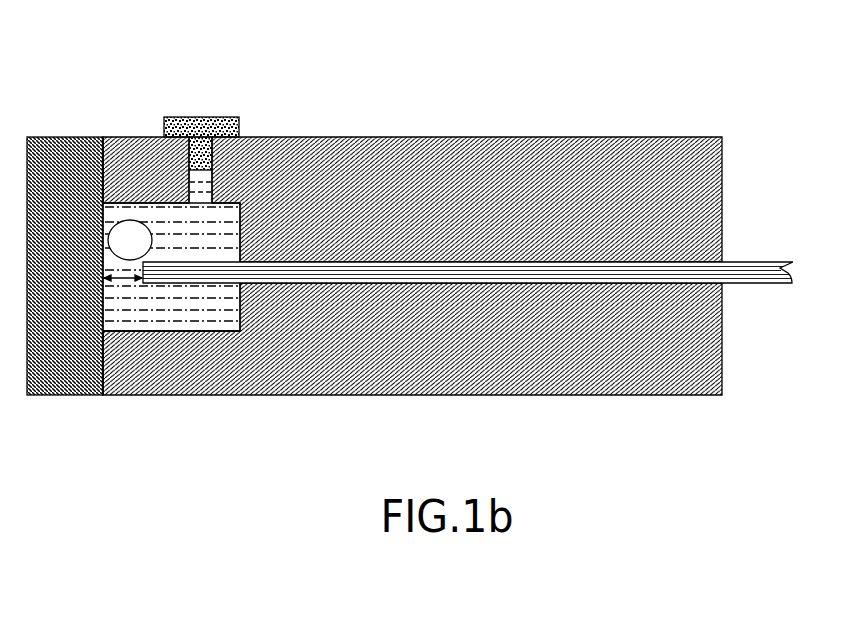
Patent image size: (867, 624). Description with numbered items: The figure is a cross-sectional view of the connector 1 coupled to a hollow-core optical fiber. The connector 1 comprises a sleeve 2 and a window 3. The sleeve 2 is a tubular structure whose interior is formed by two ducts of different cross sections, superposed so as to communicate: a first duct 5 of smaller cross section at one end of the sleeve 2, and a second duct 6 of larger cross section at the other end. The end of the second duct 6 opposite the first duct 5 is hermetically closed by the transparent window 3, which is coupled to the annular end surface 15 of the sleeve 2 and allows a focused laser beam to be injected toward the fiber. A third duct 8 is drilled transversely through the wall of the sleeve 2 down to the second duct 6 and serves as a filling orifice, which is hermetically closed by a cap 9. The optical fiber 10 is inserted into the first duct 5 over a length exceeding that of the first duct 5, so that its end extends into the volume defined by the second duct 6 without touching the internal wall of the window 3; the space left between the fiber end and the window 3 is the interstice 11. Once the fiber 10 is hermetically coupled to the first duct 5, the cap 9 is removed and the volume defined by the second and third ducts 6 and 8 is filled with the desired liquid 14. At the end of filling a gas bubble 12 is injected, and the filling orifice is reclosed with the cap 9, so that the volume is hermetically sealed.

The connector 1 is at (655, 75).
The sleeve 2 is at (487, 136).
The window 3 is at (62, 136).
The first duct 5 is at (512, 284).
The second duct 6 is at (175, 329).
The third duct 8 is at (203, 179).
The cap 9 is at (207, 117).
The optical fiber 10 is at (735, 261).
The interstice 11 is at (128, 281).
The gas bubble 12 is at (129, 233).
The liquid 14 is at (227, 313).
The annular end surface 15 is at (102, 360).